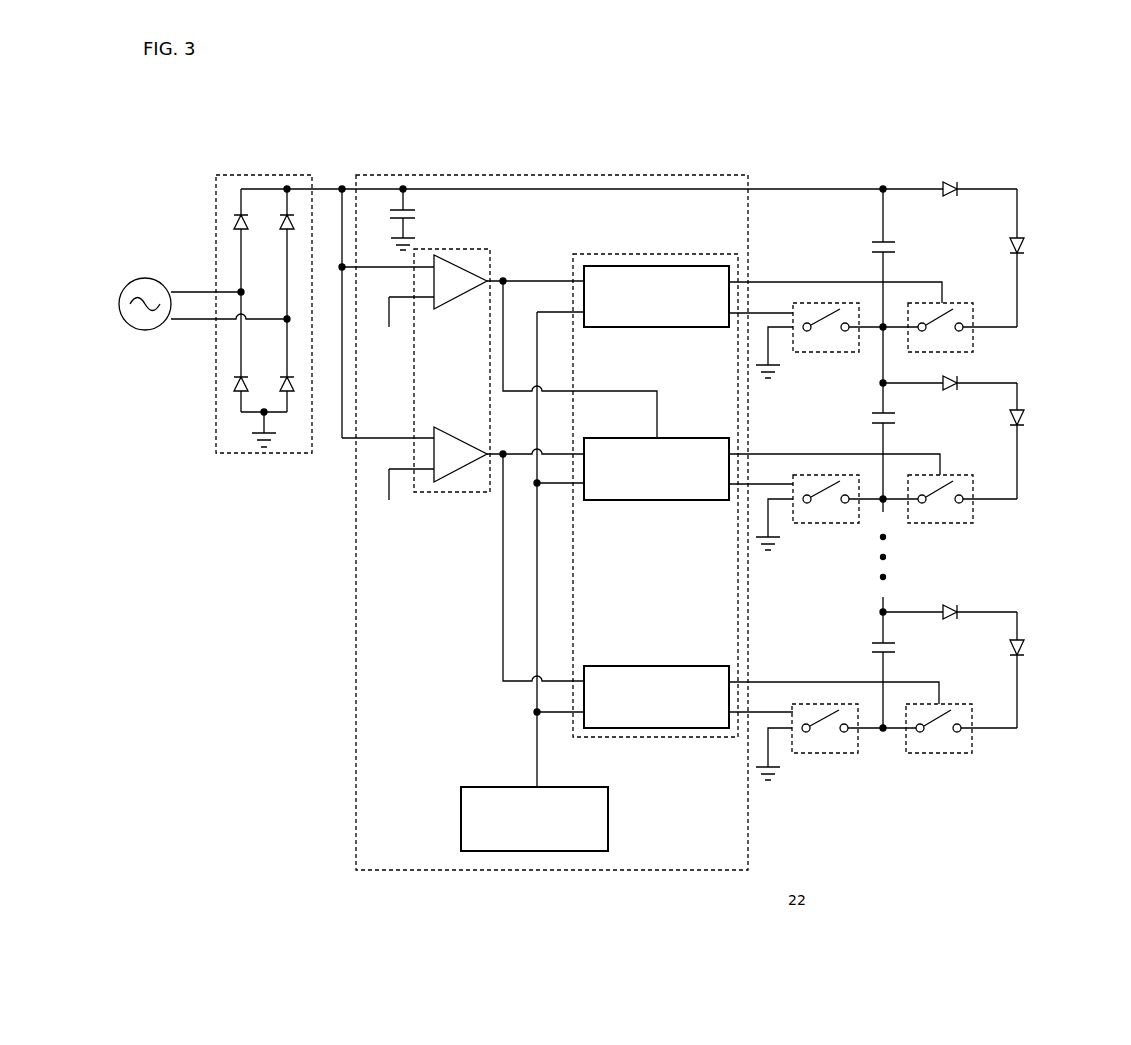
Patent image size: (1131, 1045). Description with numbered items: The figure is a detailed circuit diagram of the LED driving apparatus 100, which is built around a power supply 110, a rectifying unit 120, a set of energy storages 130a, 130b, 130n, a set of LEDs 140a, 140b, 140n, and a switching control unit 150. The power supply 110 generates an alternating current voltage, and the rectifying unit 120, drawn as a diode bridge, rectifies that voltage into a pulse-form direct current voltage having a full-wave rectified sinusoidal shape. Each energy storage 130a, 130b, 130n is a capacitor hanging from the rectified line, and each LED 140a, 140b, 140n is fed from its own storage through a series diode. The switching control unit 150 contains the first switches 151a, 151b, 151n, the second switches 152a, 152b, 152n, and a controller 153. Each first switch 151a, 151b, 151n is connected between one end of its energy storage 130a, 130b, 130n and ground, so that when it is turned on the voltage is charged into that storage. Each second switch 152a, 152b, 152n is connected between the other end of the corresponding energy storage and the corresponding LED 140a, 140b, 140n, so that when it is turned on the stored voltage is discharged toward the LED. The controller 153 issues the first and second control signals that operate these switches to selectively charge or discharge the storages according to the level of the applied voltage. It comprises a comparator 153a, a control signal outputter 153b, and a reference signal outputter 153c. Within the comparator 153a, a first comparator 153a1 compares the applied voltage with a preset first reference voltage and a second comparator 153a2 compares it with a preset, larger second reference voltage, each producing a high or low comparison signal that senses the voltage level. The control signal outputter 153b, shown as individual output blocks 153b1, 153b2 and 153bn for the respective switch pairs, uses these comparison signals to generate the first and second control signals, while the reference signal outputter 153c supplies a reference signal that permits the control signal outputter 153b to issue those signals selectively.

The LED driving apparatus 100 is at (163, 100).
The power supply 110 is at (145, 331).
The rectifying unit 120 is at (266, 175).
The energy storage 130a is at (872, 247).
The energy storage 130b is at (897, 418).
The energy storage 130n is at (897, 647).
The LED 140a is at (1024, 250).
The LED 140b is at (1024, 420).
The LED 140n is at (1024, 650).
The switching control unit 150 is at (957, 116).
The first switch 151a is at (810, 303).
The first switch 151b is at (825, 525).
The first switch 151n is at (823, 755).
The second switch 152a is at (925, 303).
The second switch 152b is at (940, 525).
The second switch 152n is at (940, 755).
The controller 153 is at (680, 175).
The comparator 153a is at (465, 249).
The first comparator 153a1 is at (455, 310).
The second comparator 153a2 is at (455, 427).
The control signal outputter 153b is at (657, 254).
The control signal outputter 153b1 is at (657, 328).
The control signal outputter 153b2 is at (657, 501).
The control signal outputter 153bn is at (657, 666).
The reference signal outputter 153c is at (608, 818).